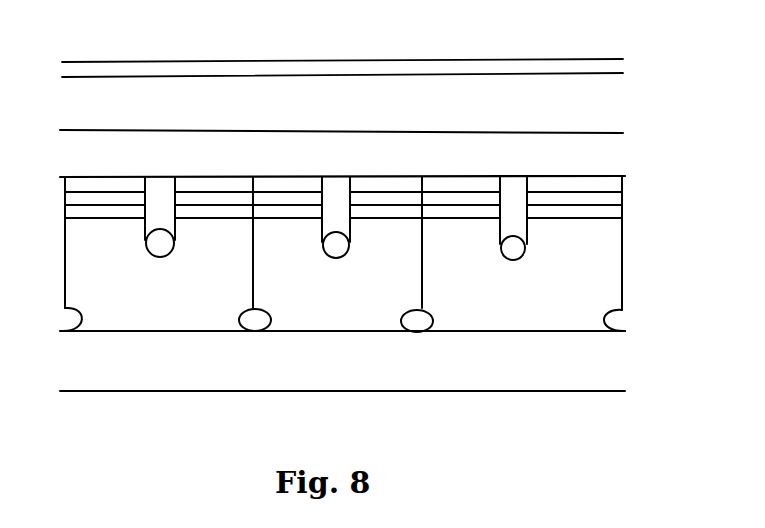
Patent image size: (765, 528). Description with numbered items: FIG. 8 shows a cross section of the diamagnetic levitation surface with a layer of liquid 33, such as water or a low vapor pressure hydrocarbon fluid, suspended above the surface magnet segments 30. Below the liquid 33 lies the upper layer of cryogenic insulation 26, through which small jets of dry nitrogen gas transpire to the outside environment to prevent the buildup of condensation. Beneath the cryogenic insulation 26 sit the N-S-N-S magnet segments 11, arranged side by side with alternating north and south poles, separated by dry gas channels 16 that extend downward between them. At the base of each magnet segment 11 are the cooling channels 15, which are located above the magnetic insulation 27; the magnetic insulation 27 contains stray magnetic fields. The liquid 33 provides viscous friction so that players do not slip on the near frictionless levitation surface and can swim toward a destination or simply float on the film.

The layer of liquid 33 is at (432, 68).
The cryogenic insulation 26 is at (203, 150).
The magnet segment 11 is at (148, 302).
The dry gas channel 16 is at (251, 270).
The cooling channel 15 is at (398, 322).
The magnetic insulation 27 is at (350, 373).
The surface magnet segments 30 is at (463, 350).